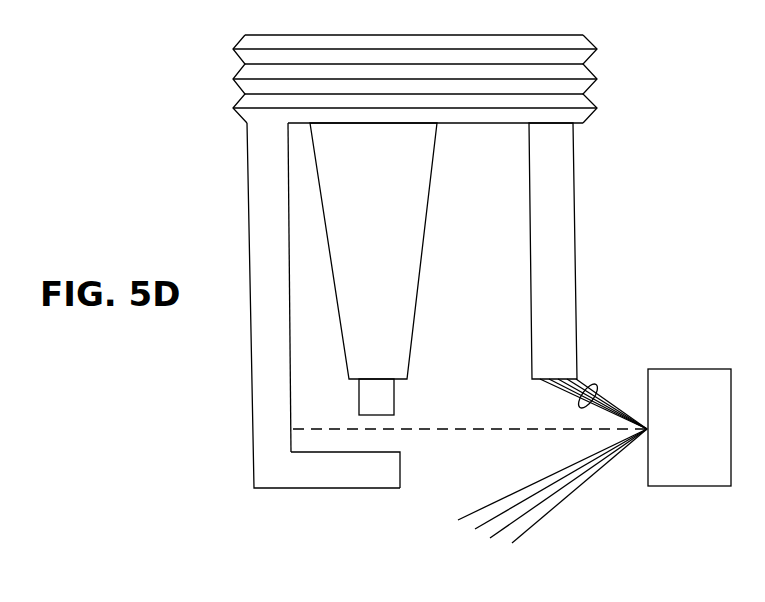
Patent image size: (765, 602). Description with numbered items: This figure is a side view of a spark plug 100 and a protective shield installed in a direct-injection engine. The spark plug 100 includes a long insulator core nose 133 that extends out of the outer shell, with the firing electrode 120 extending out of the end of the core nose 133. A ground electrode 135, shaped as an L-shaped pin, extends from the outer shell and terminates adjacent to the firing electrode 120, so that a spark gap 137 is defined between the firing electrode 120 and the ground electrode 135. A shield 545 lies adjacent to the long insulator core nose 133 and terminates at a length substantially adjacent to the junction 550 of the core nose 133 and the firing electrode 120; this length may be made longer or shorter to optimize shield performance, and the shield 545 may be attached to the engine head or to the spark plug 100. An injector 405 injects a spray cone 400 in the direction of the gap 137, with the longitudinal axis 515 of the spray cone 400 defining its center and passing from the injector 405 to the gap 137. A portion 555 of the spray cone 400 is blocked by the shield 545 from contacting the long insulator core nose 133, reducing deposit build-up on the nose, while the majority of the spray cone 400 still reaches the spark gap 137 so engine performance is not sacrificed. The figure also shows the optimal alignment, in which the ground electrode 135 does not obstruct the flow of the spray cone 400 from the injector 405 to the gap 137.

The spark plug 100 is at (597, 57).
The long insulator core nose 133 is at (340, 190).
The shield 545 is at (575, 224).
The junction 550 is at (395, 383).
The firing electrode 120 is at (358, 391).
The ground electrode 135 is at (253, 454).
The spark gap 137 is at (390, 440).
The portion of spray cone 555 is at (592, 386).
The injector 405 is at (690, 369).
The longitudinal axis 515 is at (572, 430).
The spray cone 400 is at (537, 522).